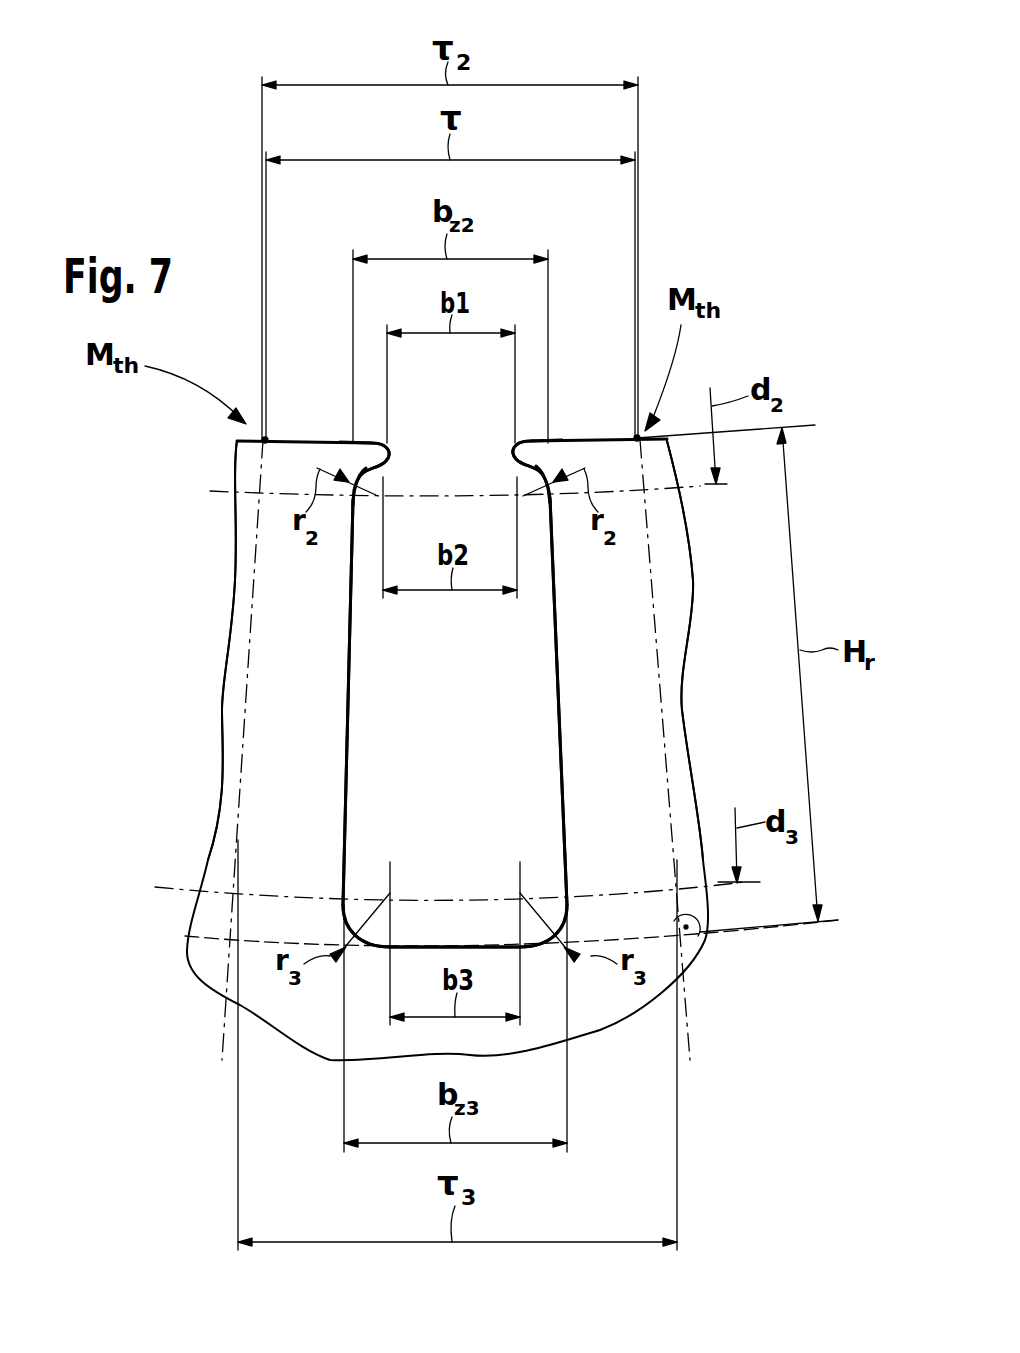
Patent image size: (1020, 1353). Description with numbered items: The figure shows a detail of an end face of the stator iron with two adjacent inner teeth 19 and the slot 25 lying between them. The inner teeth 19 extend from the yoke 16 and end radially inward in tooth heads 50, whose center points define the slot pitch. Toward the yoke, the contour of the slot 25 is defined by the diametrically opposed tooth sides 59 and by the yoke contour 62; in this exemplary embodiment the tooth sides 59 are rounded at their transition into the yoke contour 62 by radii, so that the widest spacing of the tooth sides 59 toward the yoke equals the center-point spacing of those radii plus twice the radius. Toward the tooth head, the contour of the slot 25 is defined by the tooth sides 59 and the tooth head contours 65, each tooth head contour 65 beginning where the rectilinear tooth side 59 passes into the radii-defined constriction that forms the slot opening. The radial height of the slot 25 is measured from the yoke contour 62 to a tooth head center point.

The yoke 16 is at (310, 1027).
The inner tooth 19 is at (290, 620).
The slot 25 is at (451, 450).
The tooth head 50 is at (375, 455).
The tooth side 59 is at (353, 710).
The yoke contour 62 is at (455, 940).
The tooth head contour 65 is at (378, 483).